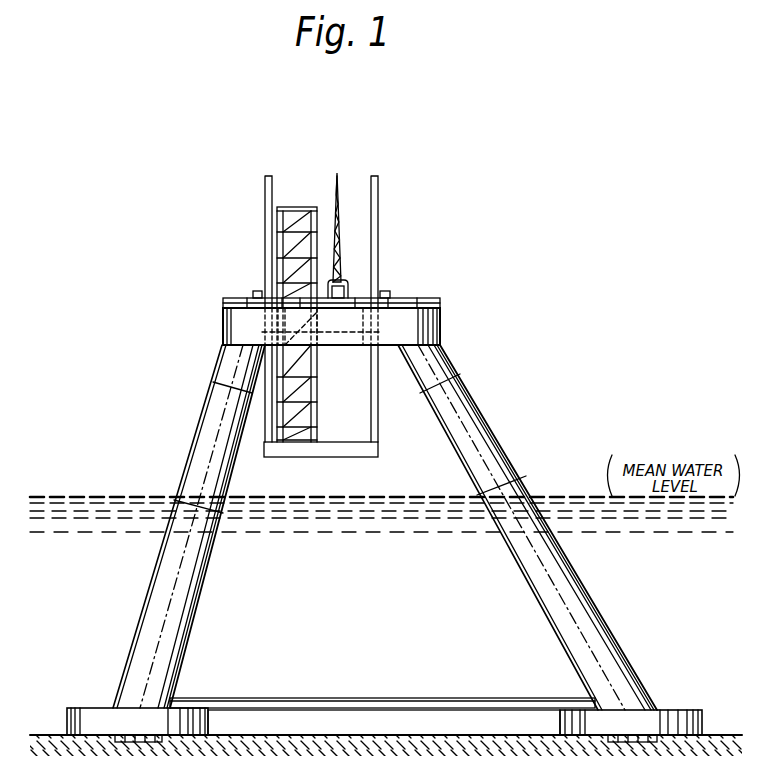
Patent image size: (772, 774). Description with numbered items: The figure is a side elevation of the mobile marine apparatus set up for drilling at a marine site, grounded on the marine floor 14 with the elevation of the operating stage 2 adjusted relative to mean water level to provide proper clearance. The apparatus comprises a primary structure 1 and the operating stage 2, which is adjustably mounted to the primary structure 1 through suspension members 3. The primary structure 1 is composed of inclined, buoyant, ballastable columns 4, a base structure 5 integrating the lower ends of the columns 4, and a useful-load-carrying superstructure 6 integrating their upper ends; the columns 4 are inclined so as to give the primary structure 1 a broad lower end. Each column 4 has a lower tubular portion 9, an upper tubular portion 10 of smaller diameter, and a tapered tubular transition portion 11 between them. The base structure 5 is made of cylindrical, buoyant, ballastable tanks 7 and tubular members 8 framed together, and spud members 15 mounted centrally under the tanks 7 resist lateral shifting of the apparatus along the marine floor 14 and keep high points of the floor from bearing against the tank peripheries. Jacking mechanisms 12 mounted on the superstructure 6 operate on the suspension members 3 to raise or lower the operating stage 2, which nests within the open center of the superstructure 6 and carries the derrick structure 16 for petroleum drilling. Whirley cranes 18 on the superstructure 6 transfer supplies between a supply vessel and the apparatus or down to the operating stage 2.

The primary structure 1 is at (548, 393).
The operating stage 2 is at (366, 452).
The suspension members 3 is at (266, 187).
The columns 4 is at (380, 527).
The base structure 5 is at (322, 694).
The useful-load-carrying superstructure 6 is at (441, 328).
The tanks 7 is at (98, 710).
The tubular members 8 is at (389, 704).
The lower tubular portion 9 is at (148, 631).
The upper tubular portion 10 is at (227, 363).
The tapered tubular transition portion 11 is at (208, 434).
The jacking mechanisms 12 is at (256, 292).
The marine floor 14 is at (45, 734).
The spud members 15 is at (135, 737).
The derrick structure 16 is at (318, 385).
The whirley cranes 18 is at (336, 187).